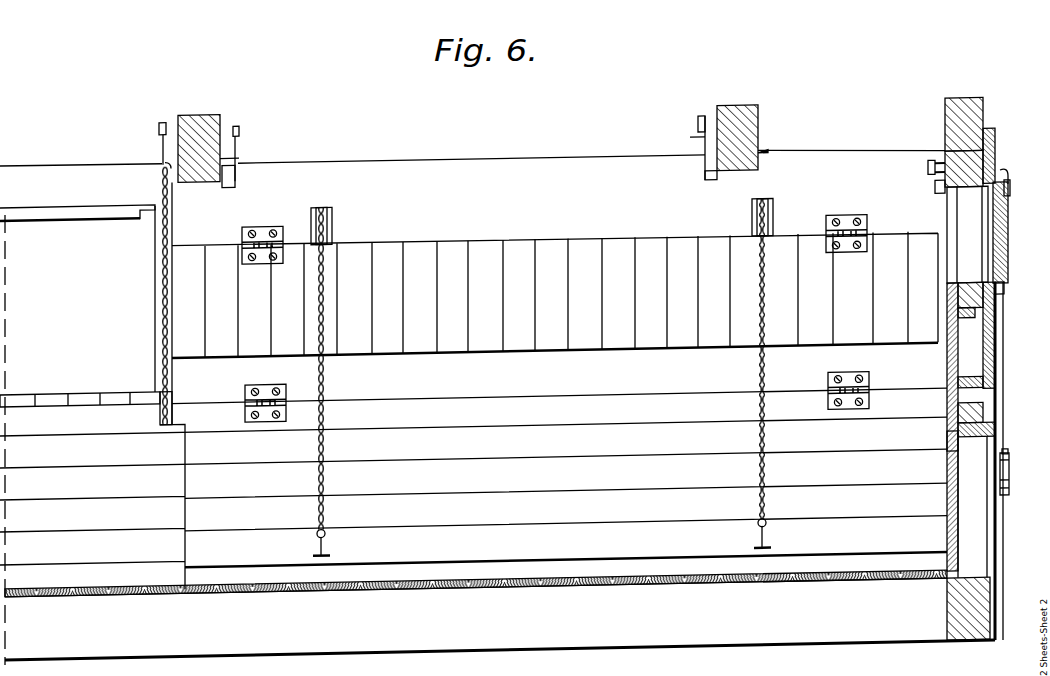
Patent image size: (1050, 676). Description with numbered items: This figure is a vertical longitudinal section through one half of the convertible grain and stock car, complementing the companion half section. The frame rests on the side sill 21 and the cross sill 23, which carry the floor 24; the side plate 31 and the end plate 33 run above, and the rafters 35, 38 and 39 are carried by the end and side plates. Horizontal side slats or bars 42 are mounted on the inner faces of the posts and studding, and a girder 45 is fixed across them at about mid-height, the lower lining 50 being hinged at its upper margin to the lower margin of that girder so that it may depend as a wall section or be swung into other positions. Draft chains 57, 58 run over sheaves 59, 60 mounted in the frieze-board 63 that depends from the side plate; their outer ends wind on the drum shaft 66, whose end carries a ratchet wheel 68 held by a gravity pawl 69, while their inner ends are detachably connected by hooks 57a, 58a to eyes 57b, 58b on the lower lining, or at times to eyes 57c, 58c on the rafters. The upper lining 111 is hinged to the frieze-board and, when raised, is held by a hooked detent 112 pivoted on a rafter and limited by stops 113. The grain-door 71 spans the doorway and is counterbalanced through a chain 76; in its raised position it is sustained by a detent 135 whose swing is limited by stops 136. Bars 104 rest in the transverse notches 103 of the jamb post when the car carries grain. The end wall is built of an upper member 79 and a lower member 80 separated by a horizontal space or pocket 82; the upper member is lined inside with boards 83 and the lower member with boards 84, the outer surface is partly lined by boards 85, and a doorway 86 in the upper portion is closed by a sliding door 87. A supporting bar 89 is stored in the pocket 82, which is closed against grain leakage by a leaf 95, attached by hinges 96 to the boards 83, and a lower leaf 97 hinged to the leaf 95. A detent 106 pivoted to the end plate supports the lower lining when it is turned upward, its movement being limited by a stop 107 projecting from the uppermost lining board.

The side sill 21 is at (500, 638).
The cross sill 23 is at (965, 625).
The floor 24 is at (437, 598).
The side plate 31 is at (77, 199).
The end plate 33 is at (950, 176).
The rafter 35 is at (958, 117).
The rafter 38 is at (196, 119).
The rafter 39 is at (735, 123).
The side slat 42 is at (476, 574).
The girder 45 is at (559, 382).
The lower lining 50 is at (566, 497).
The chain 57 is at (765, 485).
The hook 57a is at (765, 545).
The eye 57b is at (762, 566).
The eye 57c is at (763, 166).
The chain 58 is at (326, 486).
The hook 58a is at (328, 542).
The eye 58b is at (332, 563).
The eye 58c is at (237, 177).
The sheave 59 is at (752, 222).
The sheave 60 is at (332, 222).
The frieze-board 63 is at (555, 270).
The drum shaft 66 is at (1005, 508).
The ratchet wheel 68 is at (1000, 508).
The gravity pawl 69 is at (1000, 475).
The grain-door 71 is at (92, 508).
The chain 76 is at (163, 314).
The upper member 79 is at (998, 316).
The lower member 80 is at (980, 450).
The horizontal space 82 is at (977, 414).
The lining boards 83 is at (948, 375).
The lining boards 84 is at (950, 512).
The outer lining boards 85 is at (987, 150).
The doorway 86 is at (969, 234).
The sliding door 87 is at (1000, 268).
The supporting bar 89 is at (948, 439).
The leaf 95 is at (948, 419).
The hinge 96 is at (948, 395).
The leaf 97 is at (950, 456).
The transverse notch 103 is at (152, 223).
The bar 104 is at (58, 214).
The detent 106 is at (930, 185).
The stop 107 is at (940, 205).
The upper lining 111 is at (585, 293).
The hooked detent 112 is at (239, 138).
The stop 113 is at (236, 165).
The detent 135 is at (178, 146).
The stop 136 is at (165, 169).